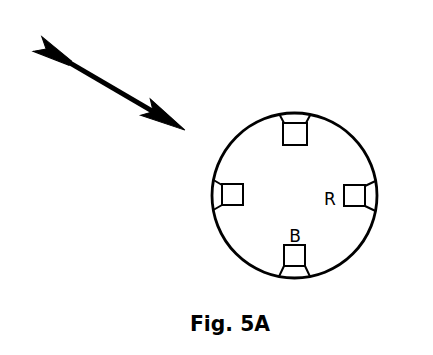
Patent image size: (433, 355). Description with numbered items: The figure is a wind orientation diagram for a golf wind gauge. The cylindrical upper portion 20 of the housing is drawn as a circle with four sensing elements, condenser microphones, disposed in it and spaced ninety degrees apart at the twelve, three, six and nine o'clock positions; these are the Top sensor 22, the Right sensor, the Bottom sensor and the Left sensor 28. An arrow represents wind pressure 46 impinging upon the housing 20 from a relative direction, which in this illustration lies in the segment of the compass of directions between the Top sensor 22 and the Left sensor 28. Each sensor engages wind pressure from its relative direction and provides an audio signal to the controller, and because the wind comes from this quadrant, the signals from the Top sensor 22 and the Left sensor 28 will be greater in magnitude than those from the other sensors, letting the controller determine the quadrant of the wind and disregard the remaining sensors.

The wind pressure 46 is at (100, 76).
The cylindrical upper portion 20 is at (328, 270).
The Top sensor 22 is at (308, 133).
The Left sensor 28 is at (232, 208).